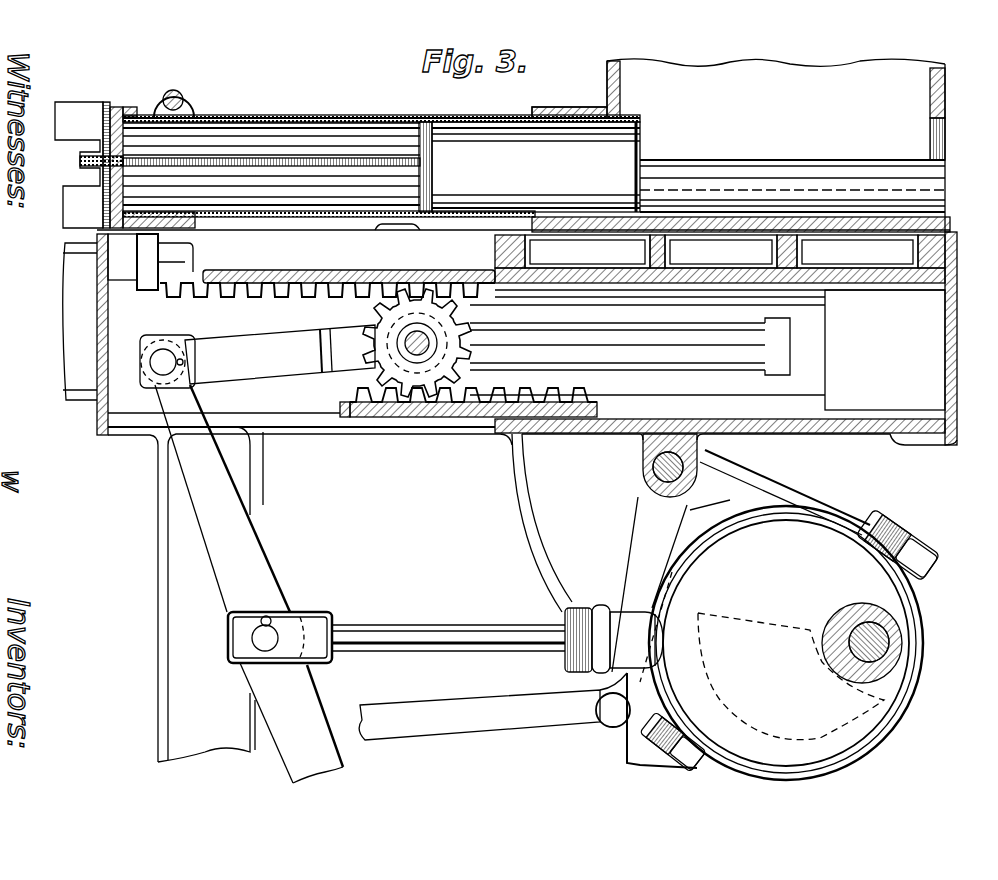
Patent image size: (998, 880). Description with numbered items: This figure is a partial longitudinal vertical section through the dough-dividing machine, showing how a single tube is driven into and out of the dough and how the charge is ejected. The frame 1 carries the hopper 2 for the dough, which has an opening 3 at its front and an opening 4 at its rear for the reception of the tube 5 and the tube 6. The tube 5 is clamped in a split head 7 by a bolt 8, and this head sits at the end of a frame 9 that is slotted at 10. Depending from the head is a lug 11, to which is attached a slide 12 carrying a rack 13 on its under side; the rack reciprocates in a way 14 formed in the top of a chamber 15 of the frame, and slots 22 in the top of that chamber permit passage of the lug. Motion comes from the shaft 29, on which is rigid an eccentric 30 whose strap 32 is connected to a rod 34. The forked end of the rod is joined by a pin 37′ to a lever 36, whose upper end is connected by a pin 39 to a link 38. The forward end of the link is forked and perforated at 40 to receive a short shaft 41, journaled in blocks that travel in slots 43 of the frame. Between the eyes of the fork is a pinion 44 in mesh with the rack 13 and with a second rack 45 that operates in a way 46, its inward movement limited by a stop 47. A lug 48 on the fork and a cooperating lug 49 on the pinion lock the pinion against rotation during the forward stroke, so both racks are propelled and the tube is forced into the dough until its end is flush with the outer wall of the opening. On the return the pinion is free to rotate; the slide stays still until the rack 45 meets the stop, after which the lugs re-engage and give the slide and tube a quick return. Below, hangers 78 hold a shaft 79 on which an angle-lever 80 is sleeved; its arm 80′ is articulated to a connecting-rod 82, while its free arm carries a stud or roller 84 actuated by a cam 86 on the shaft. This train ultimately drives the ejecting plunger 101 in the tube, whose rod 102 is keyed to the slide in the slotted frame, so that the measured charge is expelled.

The frame 1 is at (185, 592).
The hopper 2 is at (738, 145).
The opening 3 is at (935, 188).
The opening 4 is at (632, 126).
The tube 5 is at (536, 167).
The tube 6 is at (746, 470).
The split head 7 is at (183, 110).
The bolt 8 is at (185, 92).
The frame 9 is at (68, 115).
The slot 10 is at (92, 148).
The lug 11 is at (148, 262).
The slide 12 is at (230, 270).
The rack 13 is at (235, 296).
The way 14 is at (615, 293).
The chamber 15 is at (726, 338).
The slots 22 is at (372, 242).
The shaft 29 is at (895, 643).
The eccentric 30 is at (786, 643).
The strap 32 is at (915, 688).
The rod 34 is at (455, 642).
The lever 36 is at (249, 584).
The pin 37′ is at (285, 632).
The link 38 is at (280, 354).
The pin 39 is at (162, 365).
The fork 40 is at (415, 352).
The short shaft 41 is at (419, 355).
The slots 43 is at (658, 340).
The pinion 44 is at (452, 346).
The rack 45 is at (590, 408).
The way 46 is at (602, 430).
The stop 47 is at (350, 430).
The lug 48 is at (445, 288).
The lug 49 is at (430, 318).
The hangers 78 is at (705, 452).
The shaft 79 is at (652, 478).
The angle-lever 80 is at (649, 589).
The arm 80′ is at (600, 678).
The connecting-rod 82 is at (494, 715).
The stud or roller 84 is at (925, 553).
The cam 86 is at (830, 745).
The ejecting plunger 101 is at (434, 150).
The rod 102 is at (228, 180).